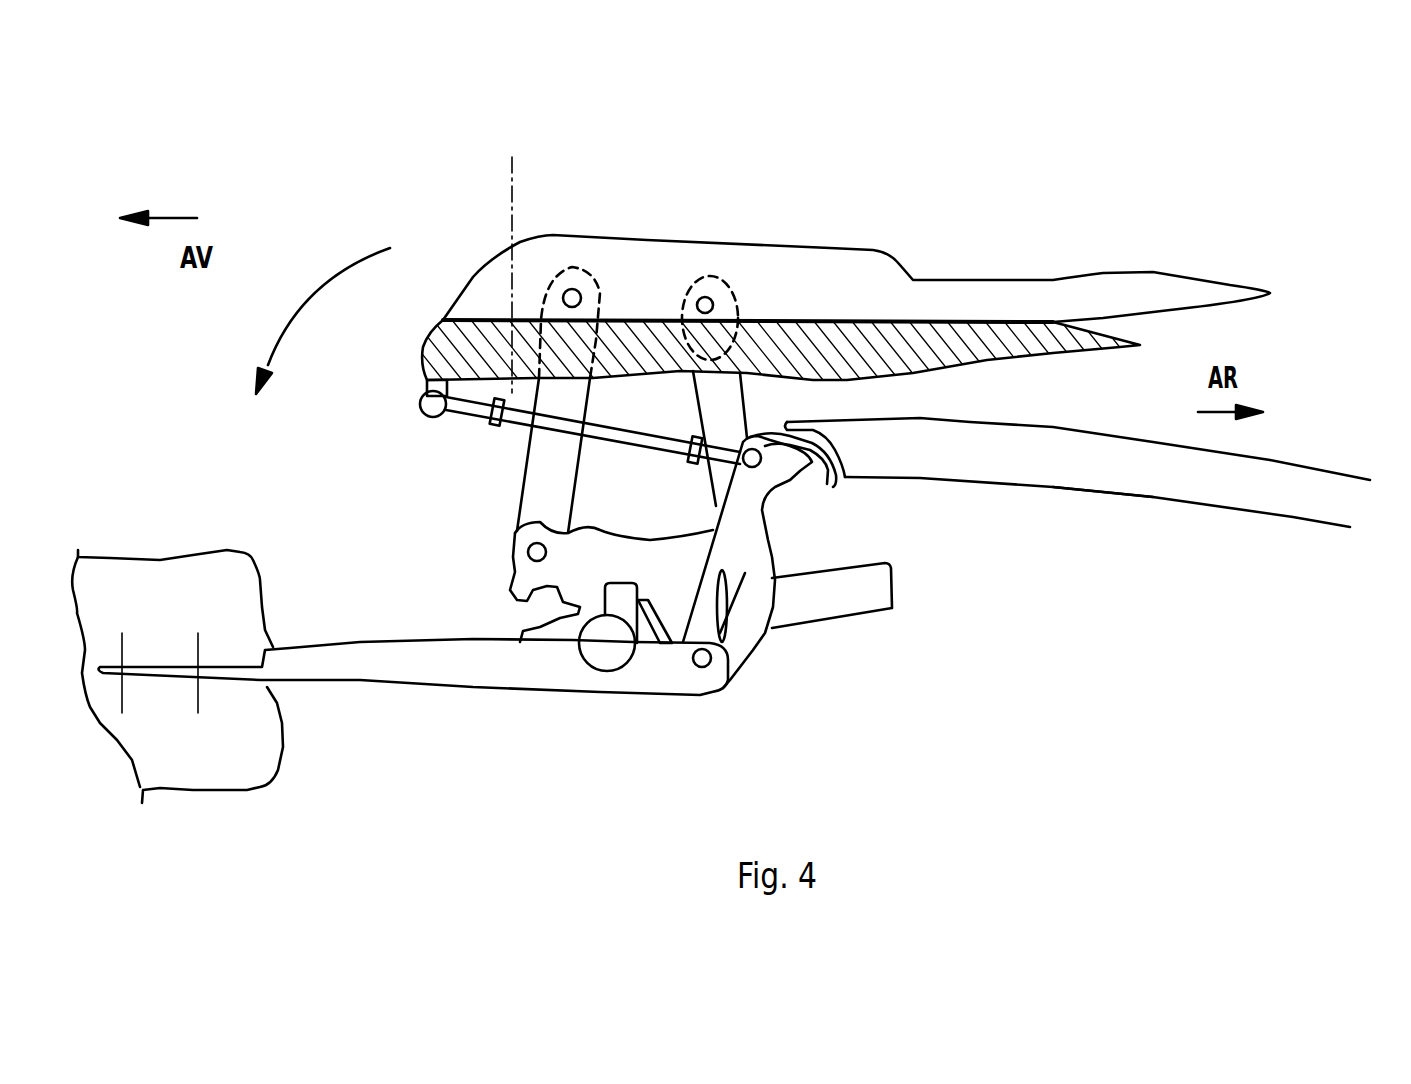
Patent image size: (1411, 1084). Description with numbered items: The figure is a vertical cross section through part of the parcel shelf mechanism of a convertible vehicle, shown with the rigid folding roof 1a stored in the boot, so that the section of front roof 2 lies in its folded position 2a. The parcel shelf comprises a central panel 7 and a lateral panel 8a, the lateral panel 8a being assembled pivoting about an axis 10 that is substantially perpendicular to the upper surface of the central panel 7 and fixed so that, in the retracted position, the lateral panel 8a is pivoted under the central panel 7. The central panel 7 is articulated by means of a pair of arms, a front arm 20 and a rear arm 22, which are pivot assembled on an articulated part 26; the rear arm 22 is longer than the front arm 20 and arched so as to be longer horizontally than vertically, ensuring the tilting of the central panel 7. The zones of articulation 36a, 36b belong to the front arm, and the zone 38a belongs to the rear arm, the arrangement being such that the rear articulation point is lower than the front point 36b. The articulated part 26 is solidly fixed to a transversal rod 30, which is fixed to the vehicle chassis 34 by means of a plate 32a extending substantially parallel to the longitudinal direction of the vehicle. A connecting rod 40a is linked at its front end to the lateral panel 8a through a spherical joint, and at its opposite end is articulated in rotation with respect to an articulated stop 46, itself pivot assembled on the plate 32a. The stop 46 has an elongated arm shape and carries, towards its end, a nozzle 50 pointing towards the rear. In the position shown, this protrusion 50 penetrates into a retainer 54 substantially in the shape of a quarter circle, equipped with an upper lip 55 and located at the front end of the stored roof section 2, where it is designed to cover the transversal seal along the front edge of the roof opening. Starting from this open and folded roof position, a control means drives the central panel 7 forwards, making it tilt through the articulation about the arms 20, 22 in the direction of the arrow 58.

The rigid folding roof 1a is at (1080, 499).
The section of front roof 2 is at (1272, 475).
The folded position of front roof section 2a is at (957, 474).
The central panel 7 is at (623, 253).
The lateral panel 8a is at (430, 347).
The axis 10 is at (513, 177).
The front arm 20 is at (527, 497).
The rear arm 22 is at (722, 408).
The articulated part 26 is at (643, 540).
The transversal rod 30 is at (607, 650).
The plate 32a is at (403, 668).
The chassis 34 is at (175, 573).
The zone of articulation 36a is at (552, 297).
The zone of articulation 36b is at (530, 552).
The zone of articulation 38a is at (706, 303).
The connecting rod 40a is at (517, 417).
The articulated stop 46 is at (743, 572).
The nozzle 50 is at (840, 422).
The retainer 54 is at (847, 450).
The upper lip 55 is at (807, 460).
The arrow 58 is at (282, 329).